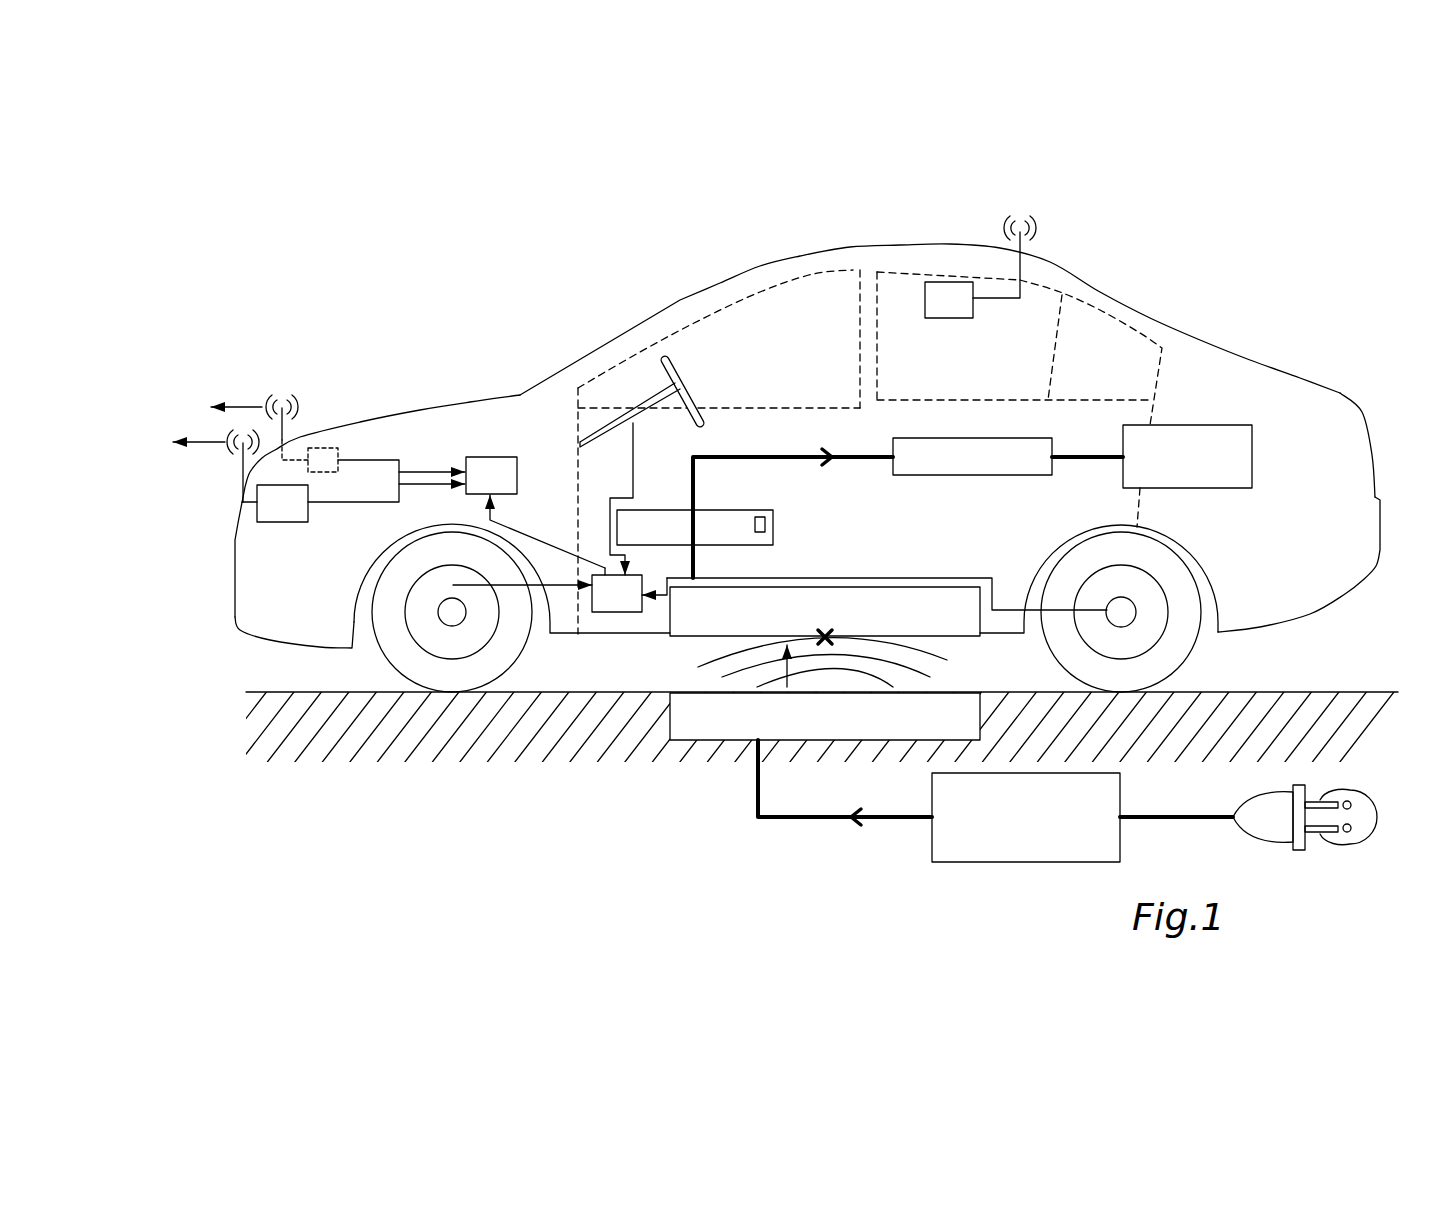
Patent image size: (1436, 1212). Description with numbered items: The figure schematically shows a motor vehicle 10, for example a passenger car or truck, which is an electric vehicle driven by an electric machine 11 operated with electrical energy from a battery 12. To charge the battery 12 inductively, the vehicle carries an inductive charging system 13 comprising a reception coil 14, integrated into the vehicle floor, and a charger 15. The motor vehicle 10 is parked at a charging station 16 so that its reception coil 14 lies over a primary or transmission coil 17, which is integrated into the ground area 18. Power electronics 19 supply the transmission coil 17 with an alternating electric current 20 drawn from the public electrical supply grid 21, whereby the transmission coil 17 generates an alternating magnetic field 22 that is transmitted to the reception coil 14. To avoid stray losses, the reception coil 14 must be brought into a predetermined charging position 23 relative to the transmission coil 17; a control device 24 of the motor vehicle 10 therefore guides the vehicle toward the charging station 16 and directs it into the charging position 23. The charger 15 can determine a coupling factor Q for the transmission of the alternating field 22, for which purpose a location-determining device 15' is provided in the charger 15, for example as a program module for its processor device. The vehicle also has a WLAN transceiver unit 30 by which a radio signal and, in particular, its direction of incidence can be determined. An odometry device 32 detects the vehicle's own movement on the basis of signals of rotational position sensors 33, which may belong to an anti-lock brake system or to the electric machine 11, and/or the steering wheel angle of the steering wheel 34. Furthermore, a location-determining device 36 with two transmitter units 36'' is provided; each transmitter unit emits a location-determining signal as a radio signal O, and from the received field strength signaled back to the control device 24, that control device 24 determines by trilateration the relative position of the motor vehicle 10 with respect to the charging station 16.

The motor vehicle 10 is at (862, 243).
The electric machine 11 is at (1179, 425).
The battery 12 is at (984, 437).
The inductive charging system 13 is at (640, 398).
The reception coil 14 is at (920, 587).
The charger 15 is at (729, 539).
The location-determining device 15' is at (793, 511).
The charging station 16 is at (592, 797).
The transmission coil 17 is at (703, 742).
The ground area 18 is at (270, 690).
The power electronics 19 is at (1008, 862).
The alternating electric current 20 is at (858, 820).
The public electrical supply grid 21 is at (1327, 843).
The alternating magnetic field 22 is at (940, 660).
The charging position 23 is at (823, 630).
The control device 24 is at (490, 457).
The WLAN transceiver unit 30 is at (940, 320).
The odometry device 32 is at (619, 612).
The rotational position sensors 33 is at (455, 613).
The steering wheel 34 is at (682, 371).
The location-determining device 36 is at (337, 419).
The transmitter units 36'' is at (313, 475).
The radio signal O is at (203, 443).
The coupling factor Q is at (753, 668).